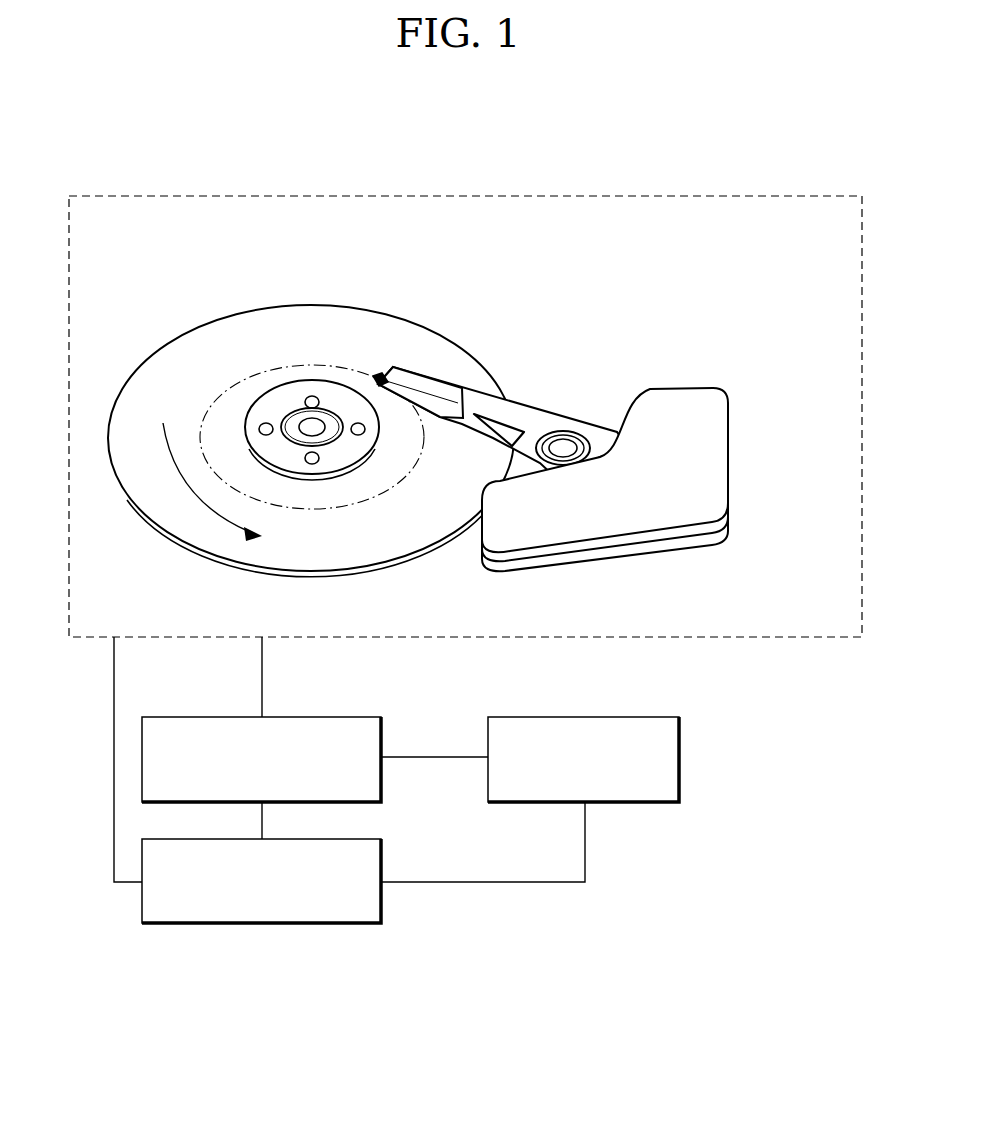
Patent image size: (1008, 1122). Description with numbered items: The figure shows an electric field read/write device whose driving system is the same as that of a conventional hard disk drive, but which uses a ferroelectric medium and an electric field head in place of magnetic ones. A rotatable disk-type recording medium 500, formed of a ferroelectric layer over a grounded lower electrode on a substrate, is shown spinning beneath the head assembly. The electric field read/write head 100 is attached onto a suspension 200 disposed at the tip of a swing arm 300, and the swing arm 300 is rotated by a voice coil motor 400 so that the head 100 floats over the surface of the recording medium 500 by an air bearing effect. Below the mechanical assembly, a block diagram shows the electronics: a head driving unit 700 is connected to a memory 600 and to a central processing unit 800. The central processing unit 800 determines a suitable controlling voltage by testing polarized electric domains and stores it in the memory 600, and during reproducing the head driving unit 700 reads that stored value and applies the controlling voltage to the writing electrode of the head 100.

The electric field read/write head 100 is at (381, 364).
The suspension 200 is at (421, 403).
The swing arm 300 is at (507, 393).
The voice coil motor 400 is at (745, 437).
The recording medium 500 is at (264, 356).
The memory 600 is at (679, 760).
The head driving unit 700 is at (383, 740).
The central processing unit 800 is at (305, 923).